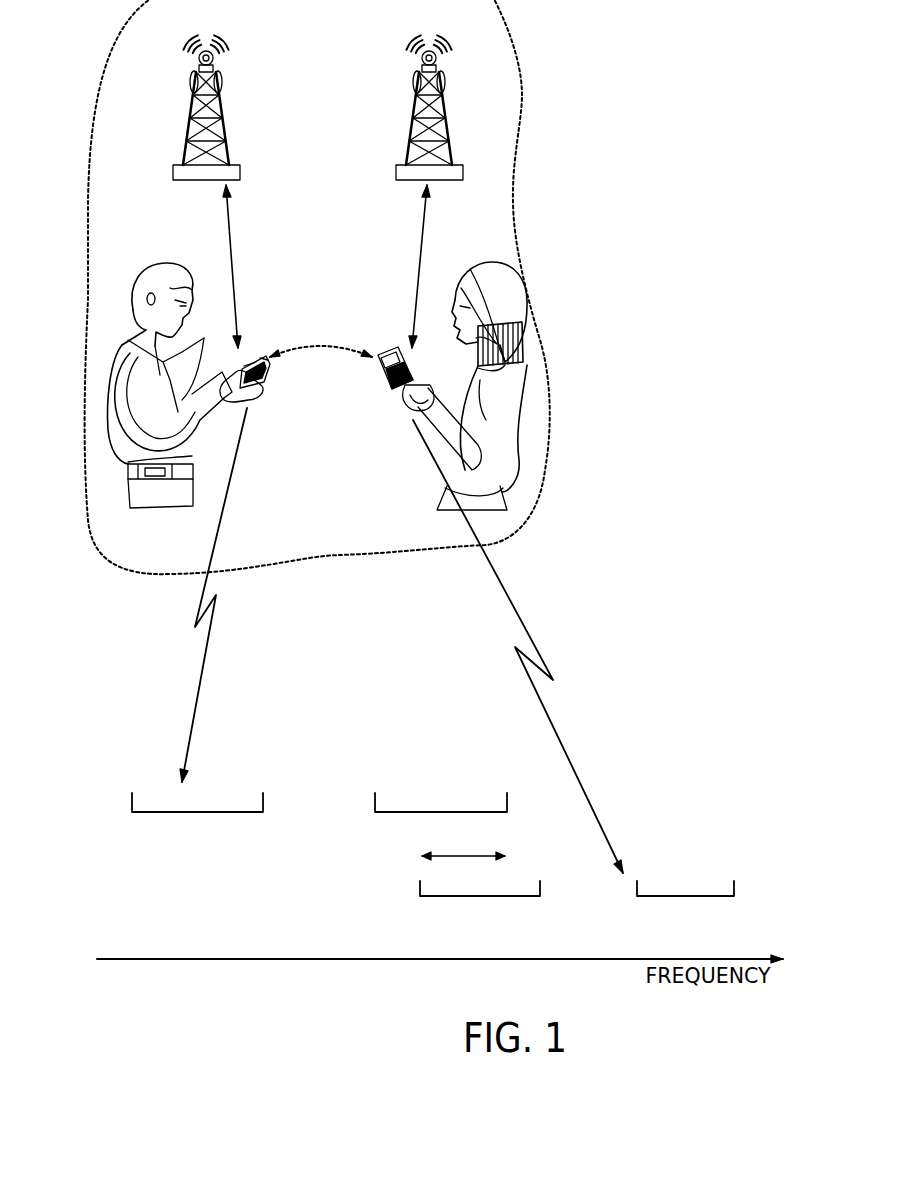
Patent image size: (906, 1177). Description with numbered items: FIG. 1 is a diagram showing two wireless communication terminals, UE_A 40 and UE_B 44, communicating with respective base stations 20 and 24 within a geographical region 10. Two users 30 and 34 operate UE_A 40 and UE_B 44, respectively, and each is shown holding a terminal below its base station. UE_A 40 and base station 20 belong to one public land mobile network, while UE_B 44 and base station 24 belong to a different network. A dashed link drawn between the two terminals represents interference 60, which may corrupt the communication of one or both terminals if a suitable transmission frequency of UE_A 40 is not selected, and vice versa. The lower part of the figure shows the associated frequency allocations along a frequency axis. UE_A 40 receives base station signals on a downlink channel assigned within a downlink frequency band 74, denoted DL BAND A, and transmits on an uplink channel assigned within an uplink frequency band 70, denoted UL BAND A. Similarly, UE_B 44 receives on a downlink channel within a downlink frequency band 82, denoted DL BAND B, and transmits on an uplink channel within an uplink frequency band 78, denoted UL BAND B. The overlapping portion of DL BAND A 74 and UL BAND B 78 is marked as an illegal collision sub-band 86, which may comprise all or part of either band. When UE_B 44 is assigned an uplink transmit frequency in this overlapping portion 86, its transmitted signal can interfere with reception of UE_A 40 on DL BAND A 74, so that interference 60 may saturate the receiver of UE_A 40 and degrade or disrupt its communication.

The geographical region 10 is at (520, 44).
The base station 20 is at (192, 86).
The base station 24 is at (443, 80).
The user 30 is at (182, 272).
The user 34 is at (466, 266).
The wireless communication terminal (UE_A) 40 is at (255, 356).
The wireless communication terminal (UE_B) 44 is at (395, 354).
The interference 60 is at (317, 346).
The uplink frequency band 70 is at (263, 796).
The downlink frequency band 74 is at (507, 796).
The uplink frequency band 78 is at (420, 893).
The downlink frequency band 82 is at (734, 883).
The illegal collision sub-band 86 is at (420, 856).